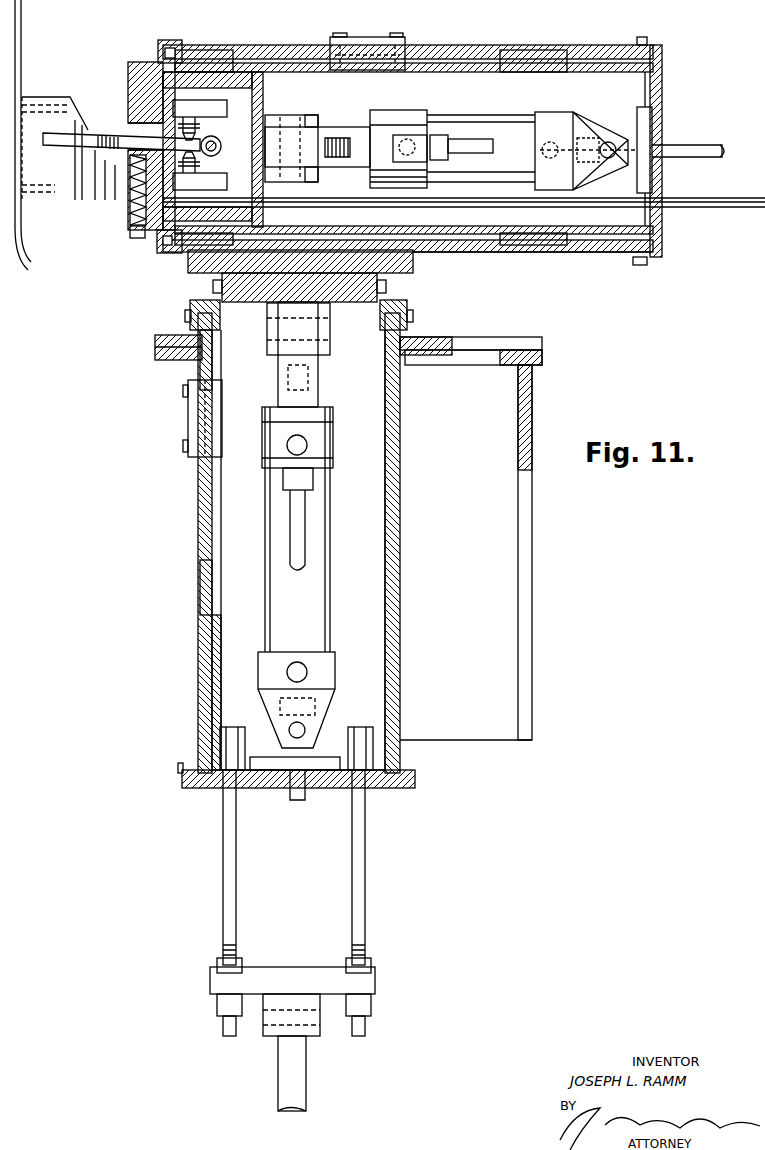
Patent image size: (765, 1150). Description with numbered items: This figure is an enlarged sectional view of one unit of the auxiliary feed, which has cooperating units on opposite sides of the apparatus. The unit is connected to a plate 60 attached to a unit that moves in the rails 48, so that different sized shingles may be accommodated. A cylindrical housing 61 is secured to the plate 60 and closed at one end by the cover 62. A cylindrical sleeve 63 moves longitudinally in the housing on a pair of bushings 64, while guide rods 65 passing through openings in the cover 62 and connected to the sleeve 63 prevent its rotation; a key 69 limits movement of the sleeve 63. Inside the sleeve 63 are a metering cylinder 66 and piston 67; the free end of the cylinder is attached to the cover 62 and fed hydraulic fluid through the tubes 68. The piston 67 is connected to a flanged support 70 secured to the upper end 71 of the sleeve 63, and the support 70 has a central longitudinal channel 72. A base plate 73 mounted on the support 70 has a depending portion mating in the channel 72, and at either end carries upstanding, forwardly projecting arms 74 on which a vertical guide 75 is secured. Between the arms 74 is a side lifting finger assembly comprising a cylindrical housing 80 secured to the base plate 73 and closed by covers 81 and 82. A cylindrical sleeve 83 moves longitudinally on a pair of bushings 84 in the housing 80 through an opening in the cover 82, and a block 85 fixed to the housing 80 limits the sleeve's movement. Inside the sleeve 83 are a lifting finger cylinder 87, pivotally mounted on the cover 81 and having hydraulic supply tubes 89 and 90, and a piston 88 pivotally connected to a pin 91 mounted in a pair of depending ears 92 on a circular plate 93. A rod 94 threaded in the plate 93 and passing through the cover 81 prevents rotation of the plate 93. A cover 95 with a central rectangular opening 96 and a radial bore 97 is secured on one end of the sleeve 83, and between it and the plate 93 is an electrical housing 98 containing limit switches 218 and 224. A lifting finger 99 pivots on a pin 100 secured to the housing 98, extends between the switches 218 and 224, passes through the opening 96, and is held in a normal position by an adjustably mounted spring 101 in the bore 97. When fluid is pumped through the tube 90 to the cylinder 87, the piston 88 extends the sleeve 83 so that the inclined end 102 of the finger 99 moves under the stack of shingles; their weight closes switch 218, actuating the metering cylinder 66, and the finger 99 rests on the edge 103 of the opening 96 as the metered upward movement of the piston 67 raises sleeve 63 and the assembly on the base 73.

The rails 48 is at (543, 346).
The plate 60 is at (178, 356).
The cylindrical housing 61 is at (197, 683).
The cover 62 is at (206, 789).
The cylindrical sleeve 63 is at (222, 660).
The bushings 64 is at (203, 378).
The guide rods 65 is at (225, 890).
The metering cylinder 66 is at (305, 608).
The piston 67 is at (283, 398).
The tubes 68 is at (300, 532).
The key 69 is at (205, 430).
The flanged support 70 is at (413, 272).
The upper end 71 is at (392, 298).
The central longitudinal channel 72 is at (250, 292).
The base plate 73 is at (428, 257).
The arms 74 is at (68, 190).
The vertical guide 75 is at (27, 256).
The cylindrical housing 80 is at (444, 46).
The cover 81 is at (664, 60).
The cover 82 is at (158, 48).
The cylindrical sleeve 83 is at (285, 62).
The bushings 84 is at (208, 60).
The block 85 is at (362, 36).
The lifting finger cylinder 87 is at (530, 125).
The piston 88 is at (367, 130).
The hydraulic supply tube 89 is at (460, 138).
The hydraulic supply tube 90 is at (696, 146).
The pin 91 is at (290, 128).
The depending ears 92 is at (319, 120).
The circular plate 93 is at (266, 93).
The rod 94 is at (700, 214).
The cover 95 is at (130, 78).
The central rectangular opening 96 is at (134, 128).
The radial bore 97 is at (131, 231).
The electrical housing 98 is at (252, 64).
The lifting finger 99 is at (72, 142).
The pin 100 is at (221, 144).
The spring 101 is at (130, 175).
The inclined end 102 is at (47, 136).
The edge 103 is at (183, 175).
The limit switch 218 is at (204, 190).
The limit switch 224 is at (205, 110).